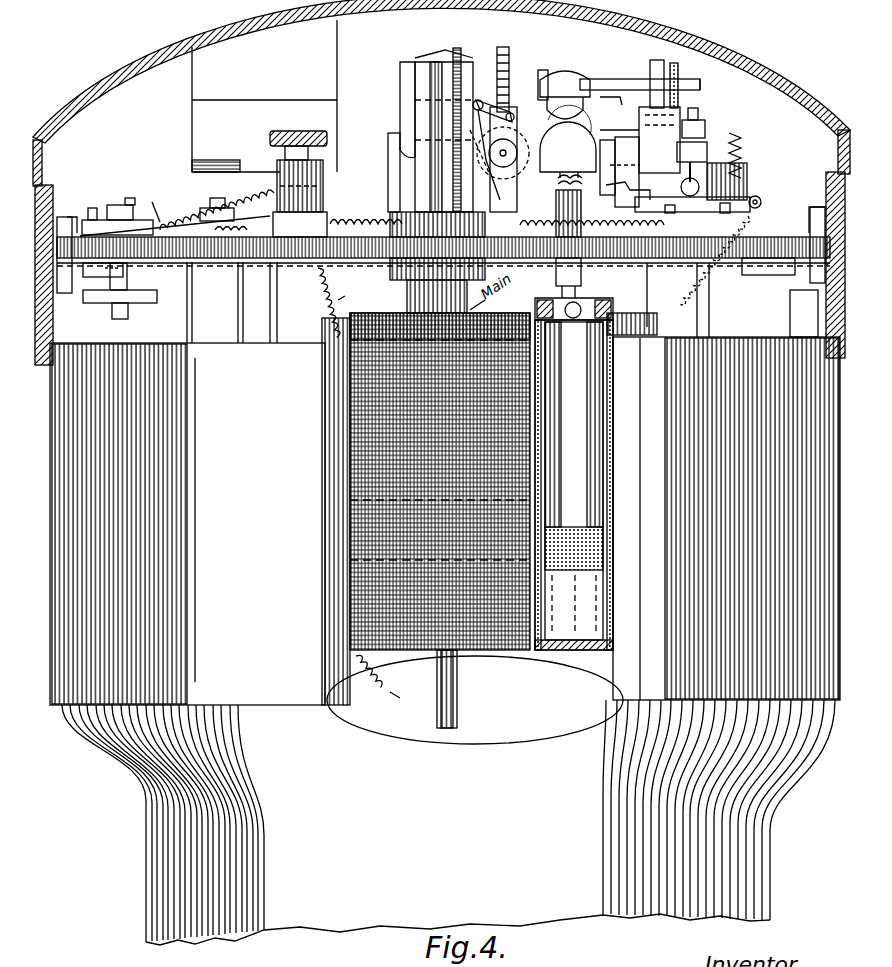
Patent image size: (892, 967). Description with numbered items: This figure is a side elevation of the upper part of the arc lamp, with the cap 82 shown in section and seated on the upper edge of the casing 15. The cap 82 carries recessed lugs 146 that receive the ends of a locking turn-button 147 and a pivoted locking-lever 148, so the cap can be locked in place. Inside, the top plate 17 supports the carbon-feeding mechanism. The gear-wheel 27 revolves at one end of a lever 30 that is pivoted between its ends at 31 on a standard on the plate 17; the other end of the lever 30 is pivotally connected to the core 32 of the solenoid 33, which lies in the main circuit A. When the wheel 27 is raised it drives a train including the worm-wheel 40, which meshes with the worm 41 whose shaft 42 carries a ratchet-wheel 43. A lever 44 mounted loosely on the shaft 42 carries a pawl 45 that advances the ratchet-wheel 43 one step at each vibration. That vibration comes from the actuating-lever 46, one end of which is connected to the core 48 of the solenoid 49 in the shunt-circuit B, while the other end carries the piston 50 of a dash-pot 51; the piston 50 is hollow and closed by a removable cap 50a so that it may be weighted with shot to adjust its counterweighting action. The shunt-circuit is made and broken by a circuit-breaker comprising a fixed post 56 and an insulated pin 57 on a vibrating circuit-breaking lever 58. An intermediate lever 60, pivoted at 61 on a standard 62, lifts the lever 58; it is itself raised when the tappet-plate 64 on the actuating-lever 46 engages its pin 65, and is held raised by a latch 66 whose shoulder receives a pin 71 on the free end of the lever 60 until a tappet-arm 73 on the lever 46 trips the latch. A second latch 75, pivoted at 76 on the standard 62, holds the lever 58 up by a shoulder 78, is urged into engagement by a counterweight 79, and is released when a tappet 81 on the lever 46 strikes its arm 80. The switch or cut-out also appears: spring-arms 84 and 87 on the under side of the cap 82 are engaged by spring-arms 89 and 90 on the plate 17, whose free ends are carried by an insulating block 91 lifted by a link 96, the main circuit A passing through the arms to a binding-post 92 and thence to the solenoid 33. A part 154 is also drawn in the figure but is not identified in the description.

The casing 15 is at (760, 876).
The top plate 17 is at (443, 251).
The gear-wheel 27 is at (459, 50).
The lever 30 is at (400, 68).
The pivot 31 is at (388, 133).
The core 32 is at (428, 92).
The solenoid 33 is at (345, 392).
The worm-wheel 40 is at (509, 55).
The worm 41 is at (498, 155).
The shaft 42 is at (513, 153).
The ratchet-wheel 43 is at (520, 180).
The lever 44 is at (515, 176).
The pawl 45 is at (512, 112).
The actuating-lever 46 is at (568, 198).
The core 48 is at (578, 72).
The solenoid 49 is at (660, 330).
The piston 50 is at (604, 372).
The removable cap 50a is at (585, 300).
The dash-pot 51 is at (613, 434).
The fixed plate or post 56 is at (682, 212).
The insulated pin 57 is at (700, 114).
The circuit-breaking lever 58 is at (707, 152).
The intermediate lever 60 is at (663, 62).
The pivot 61 is at (639, 116).
The standard 62 is at (634, 128).
The tappet-plate 64 is at (611, 103).
The pin 65 is at (628, 80).
The latch 66 is at (678, 75).
The pin 71 is at (700, 84).
The tappet-arm 73 is at (628, 172).
The latch 75 is at (680, 184).
The pivot 76 is at (690, 214).
The shoulder 78 is at (677, 150).
The counterweight 79 is at (747, 178).
The arm 80 is at (615, 186).
The tappet 81 is at (606, 167).
The cap 82 is at (165, 52).
The spring-arm 84 is at (192, 163).
The spring-arm 87 is at (330, 155).
The spring-arm 89 is at (195, 212).
The spring-arm 90 is at (330, 218).
The insulating block 91 is at (222, 224).
The binding-post 92 is at (325, 184).
The link 96 is at (277, 300).
The recessed lugs 146 is at (77, 215).
The locking turn-button 147 is at (78, 288).
The locking-lever 148 is at (806, 265).
The shaft 154 is at (458, 662).
The main circuit A is at (275, 446).
The shunt-circuit B is at (626, 253).